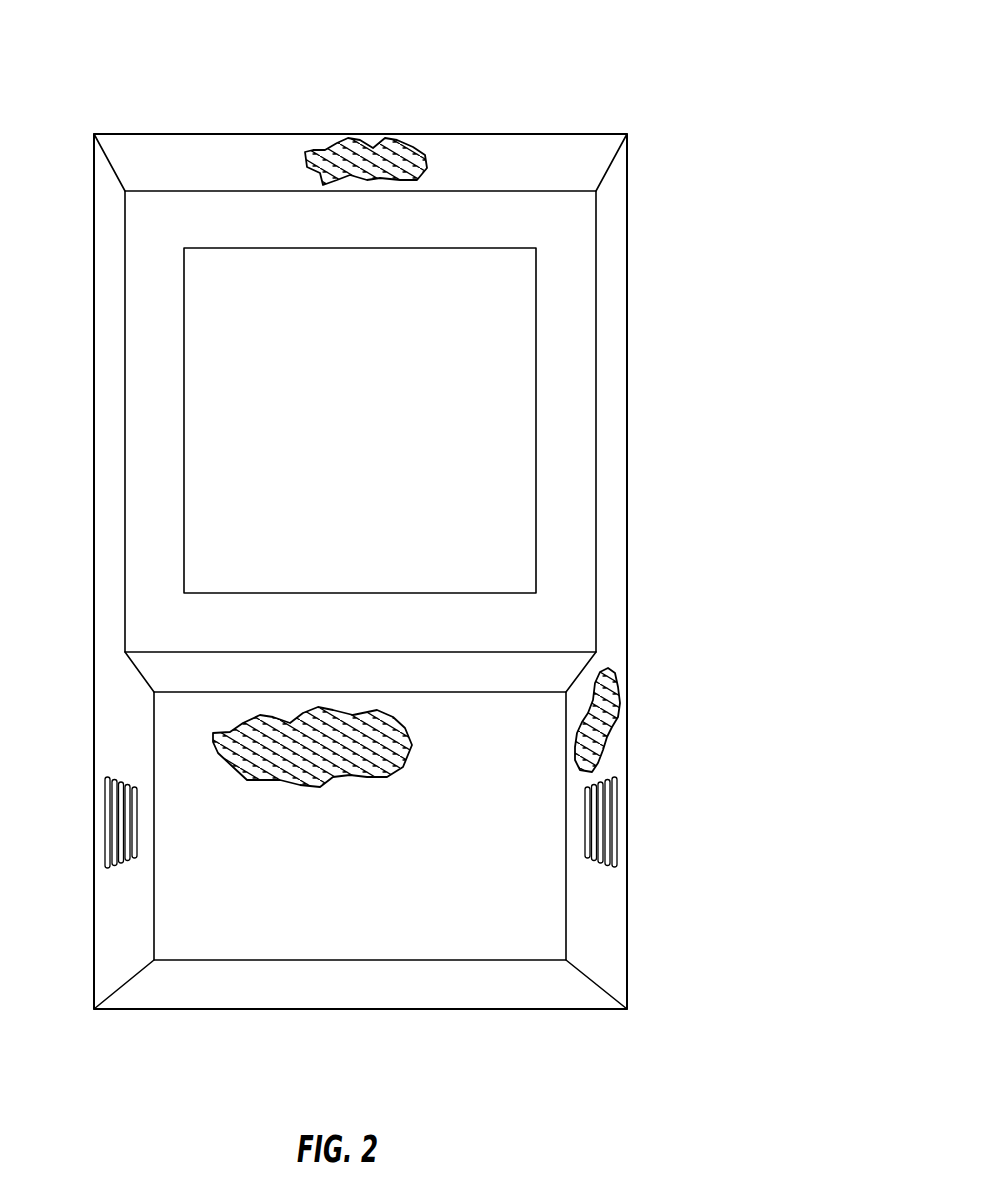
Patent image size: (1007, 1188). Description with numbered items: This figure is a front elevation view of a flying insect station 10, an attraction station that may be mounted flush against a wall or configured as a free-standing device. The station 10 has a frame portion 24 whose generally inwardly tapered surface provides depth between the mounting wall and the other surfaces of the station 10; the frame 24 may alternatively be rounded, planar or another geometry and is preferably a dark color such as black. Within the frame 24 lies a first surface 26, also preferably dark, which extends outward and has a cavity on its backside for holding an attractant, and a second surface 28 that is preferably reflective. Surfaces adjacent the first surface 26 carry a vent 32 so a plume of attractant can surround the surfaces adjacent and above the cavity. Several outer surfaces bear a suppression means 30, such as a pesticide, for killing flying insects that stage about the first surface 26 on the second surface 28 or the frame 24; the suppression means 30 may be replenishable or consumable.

The flying insect station 10 is at (617, 73).
The frame portion 24 is at (613, 374).
The first surface 26 is at (370, 836).
The second surface 28 is at (370, 423).
The suppression means 30 is at (345, 140).
The vent 32 is at (113, 812).